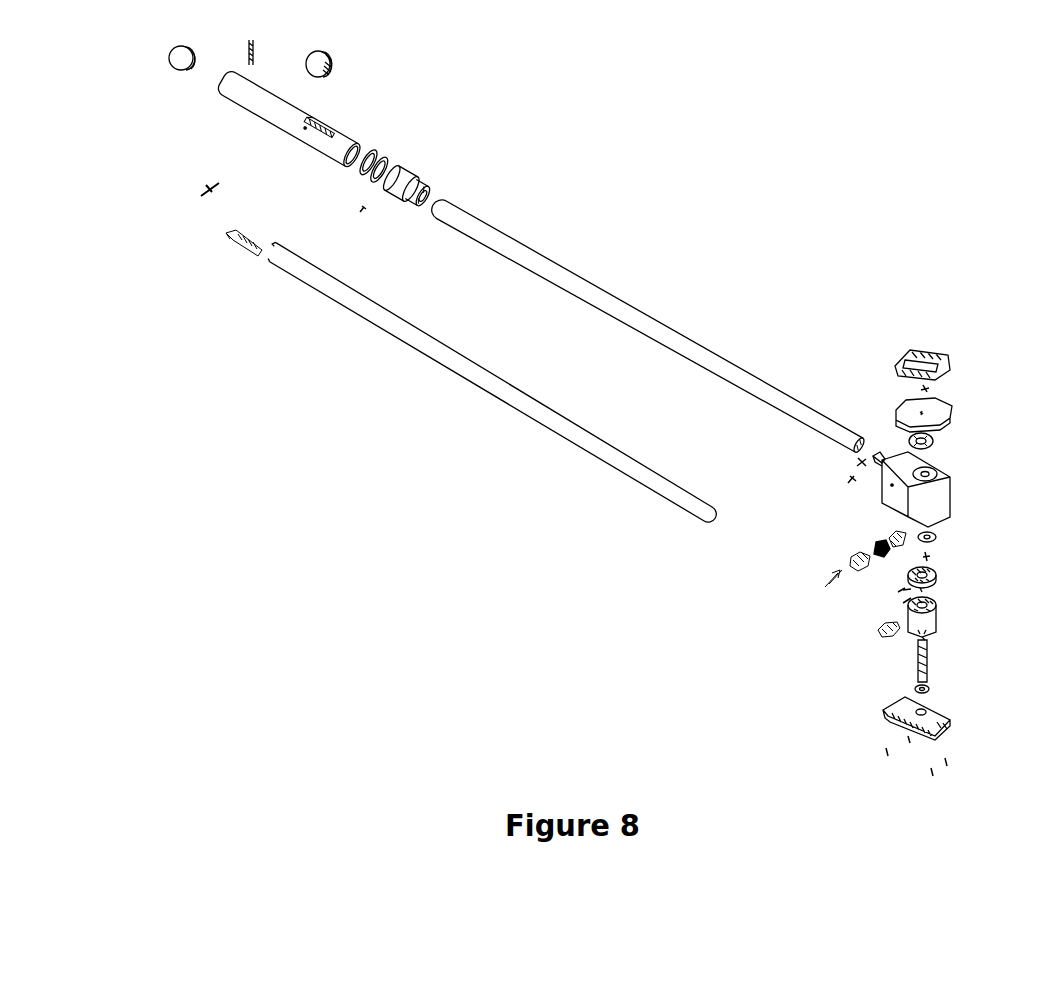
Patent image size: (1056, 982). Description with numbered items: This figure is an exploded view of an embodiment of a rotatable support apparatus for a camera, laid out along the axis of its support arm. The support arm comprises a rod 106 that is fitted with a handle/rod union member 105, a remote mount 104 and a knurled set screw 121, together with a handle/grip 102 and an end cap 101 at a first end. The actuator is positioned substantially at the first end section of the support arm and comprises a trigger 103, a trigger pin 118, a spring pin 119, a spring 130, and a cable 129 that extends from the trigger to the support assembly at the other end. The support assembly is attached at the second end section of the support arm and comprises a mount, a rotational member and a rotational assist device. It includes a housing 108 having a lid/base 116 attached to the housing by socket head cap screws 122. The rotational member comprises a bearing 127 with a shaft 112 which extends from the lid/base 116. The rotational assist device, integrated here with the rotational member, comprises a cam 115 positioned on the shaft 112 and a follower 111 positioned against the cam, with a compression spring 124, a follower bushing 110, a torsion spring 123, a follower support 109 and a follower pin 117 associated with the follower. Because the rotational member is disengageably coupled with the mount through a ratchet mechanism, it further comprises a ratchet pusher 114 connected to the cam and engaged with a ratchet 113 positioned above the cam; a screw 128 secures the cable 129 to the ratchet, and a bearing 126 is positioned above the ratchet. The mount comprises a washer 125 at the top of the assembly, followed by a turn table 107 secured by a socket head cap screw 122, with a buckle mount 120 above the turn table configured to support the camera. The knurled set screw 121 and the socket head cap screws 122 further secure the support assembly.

The end cap 101 is at (170, 75).
The handle/grip 102 is at (290, 119).
The trigger 103 is at (341, 70).
The remote mount 104 is at (373, 165).
The handle/rod union member 105 is at (406, 186).
The rod 106 is at (484, 247).
The turn table 107 is at (955, 411).
The housing 108 is at (954, 497).
The follower support 109 is at (886, 537).
The follower bushing 110 is at (848, 558).
The follower 111 is at (875, 631).
The shaft 112 is at (915, 665).
The ratchet 113 is at (940, 578).
The ratchet pusher 114 is at (905, 601).
The cam 115 is at (942, 618).
The lid/base 116 is at (880, 712).
The follower pin 117 is at (826, 576).
The trigger pin 118 is at (207, 184).
The spring pin 119 is at (257, 46).
The buckle mount 120 is at (951, 360).
The knurled set screw 121 is at (360, 209).
The socket head cap screws 122 is at (931, 390).
The torsion spring 123 is at (873, 547).
The compression spring 124 is at (898, 590).
The washer 125 is at (935, 441).
The bearing 126 is at (938, 536).
The bearing 127 is at (913, 689).
The screw 128 is at (933, 556).
The cable 129 is at (326, 300).
The spring 130 is at (228, 239).